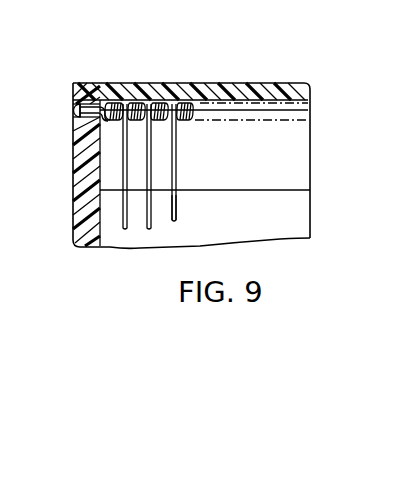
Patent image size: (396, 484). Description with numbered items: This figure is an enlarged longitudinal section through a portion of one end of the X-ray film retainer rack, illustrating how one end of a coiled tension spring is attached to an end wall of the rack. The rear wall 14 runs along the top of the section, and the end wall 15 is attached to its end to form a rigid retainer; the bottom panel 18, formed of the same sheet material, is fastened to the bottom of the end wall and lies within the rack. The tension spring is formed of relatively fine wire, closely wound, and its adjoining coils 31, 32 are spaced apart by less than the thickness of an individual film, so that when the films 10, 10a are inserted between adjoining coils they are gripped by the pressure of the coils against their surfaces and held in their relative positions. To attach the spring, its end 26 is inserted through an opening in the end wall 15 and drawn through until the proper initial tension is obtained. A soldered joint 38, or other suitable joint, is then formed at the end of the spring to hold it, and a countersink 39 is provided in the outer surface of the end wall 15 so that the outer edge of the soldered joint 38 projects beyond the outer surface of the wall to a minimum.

The X-ray film 10 is at (143, 226).
The X-ray film 10a is at (177, 198).
The rear wall 14 is at (228, 96).
The end wall 15 is at (82, 210).
The bottom panel 18 is at (262, 205).
The spring end 26 is at (96, 106).
The adjoining coil 31 is at (132, 123).
The adjoining coil 32 is at (178, 124).
The soldered joint 38 is at (70, 110).
The countersink 39 is at (78, 95).